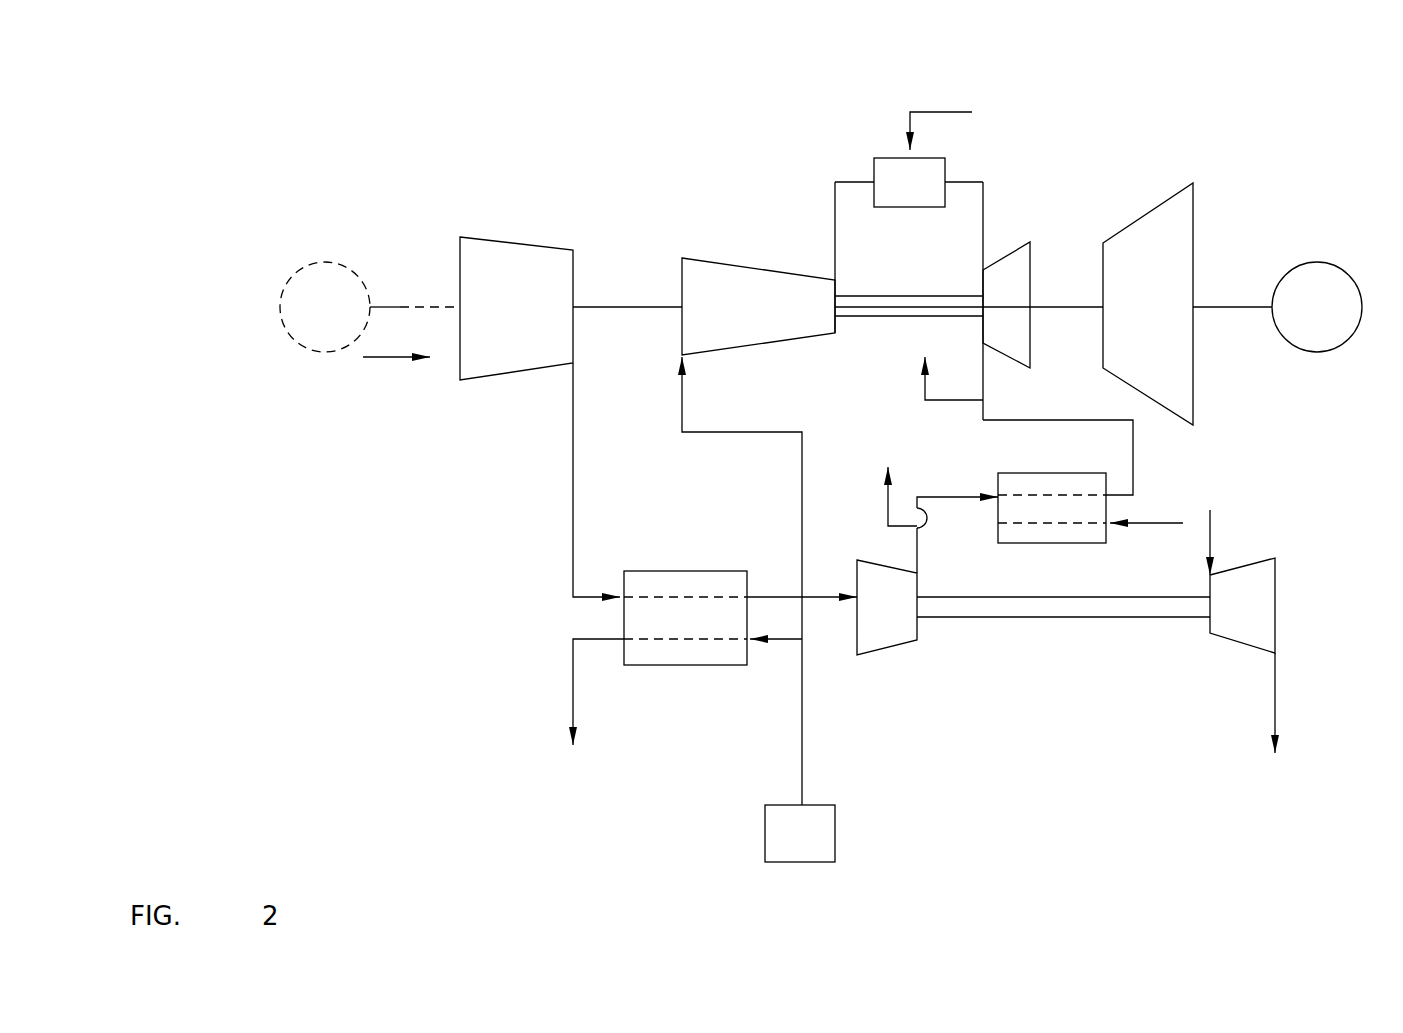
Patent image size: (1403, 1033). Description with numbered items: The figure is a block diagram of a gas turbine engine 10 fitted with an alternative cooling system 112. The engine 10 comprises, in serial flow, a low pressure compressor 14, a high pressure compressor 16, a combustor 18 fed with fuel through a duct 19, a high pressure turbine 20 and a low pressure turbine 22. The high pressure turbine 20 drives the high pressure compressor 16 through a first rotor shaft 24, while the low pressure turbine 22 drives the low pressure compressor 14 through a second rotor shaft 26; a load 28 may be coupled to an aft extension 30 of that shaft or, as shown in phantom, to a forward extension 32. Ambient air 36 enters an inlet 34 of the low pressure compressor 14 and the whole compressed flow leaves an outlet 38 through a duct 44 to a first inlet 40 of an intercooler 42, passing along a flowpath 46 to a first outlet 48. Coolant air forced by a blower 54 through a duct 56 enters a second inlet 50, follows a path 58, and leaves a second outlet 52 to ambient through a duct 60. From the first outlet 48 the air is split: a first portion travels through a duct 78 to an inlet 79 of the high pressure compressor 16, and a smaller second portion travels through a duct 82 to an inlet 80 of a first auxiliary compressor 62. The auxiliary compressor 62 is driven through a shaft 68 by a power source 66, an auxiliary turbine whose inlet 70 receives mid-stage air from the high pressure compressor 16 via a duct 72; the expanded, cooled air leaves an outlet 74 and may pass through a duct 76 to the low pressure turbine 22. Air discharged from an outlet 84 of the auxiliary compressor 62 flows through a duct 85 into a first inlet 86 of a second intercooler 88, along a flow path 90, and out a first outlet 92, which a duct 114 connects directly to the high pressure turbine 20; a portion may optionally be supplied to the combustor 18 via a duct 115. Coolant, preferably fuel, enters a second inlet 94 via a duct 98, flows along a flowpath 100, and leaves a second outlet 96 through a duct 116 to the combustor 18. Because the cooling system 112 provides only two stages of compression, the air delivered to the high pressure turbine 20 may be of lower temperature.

The gas turbine engine 10 is at (1300, 135).
The low pressure compressor 14 is at (503, 245).
The high pressure compressor 16 is at (745, 262).
The combustor 18 is at (888, 158).
The duct 19 is at (937, 112).
The high pressure turbine 20 is at (1030, 242).
The low pressure turbine 22 is at (1145, 215).
The first rotor shaft 24 is at (878, 296).
The second rotor shaft 26 is at (1090, 307).
The load 28 is at (302, 263).
The aft extension 30 is at (1237, 307).
The forward extension 32 is at (388, 307).
The inlet 34 is at (460, 372).
The ambient air 36 is at (385, 357).
The outlet 38 is at (573, 363).
The first inlet 40 is at (625, 597).
The intercooler 42 is at (660, 571).
The duct 44 is at (573, 478).
The flowpath 46 is at (722, 593).
The first outlet 48 is at (752, 597).
The second inlet 50 is at (748, 639).
The second outlet 52 is at (624, 639).
The blower 54 is at (765, 830).
The duct 56 is at (802, 745).
The path 58 is at (697, 639).
The duct 60 is at (573, 680).
The first auxiliary compressor 62 is at (886, 657).
The power source 66 is at (1250, 560).
The shaft 68 is at (1020, 617).
The inlet 70 is at (1210, 580).
The duct 72 is at (1215, 520).
The outlet 74 is at (1275, 648).
The duct 76 is at (1275, 697).
The duct 78 is at (682, 412).
The inlet 79 is at (682, 360).
The inlet 80 is at (832, 575).
The duct 82 is at (820, 597).
The outlet 84 is at (917, 572).
The duct 85 is at (917, 552).
The first inlet 86 is at (985, 497).
The second intercooler 88 is at (1012, 473).
The flow path 90 is at (1073, 495).
The first outlet 92 is at (1110, 492).
The second inlet 94 is at (1112, 530).
The second outlet 96 is at (998, 525).
The duct 98 is at (1145, 523).
The flowpath 100 is at (1053, 523).
The cooling system 112 is at (447, 702).
The duct 114 is at (1083, 420).
The duct 115 is at (925, 400).
The duct 116 is at (888, 510).